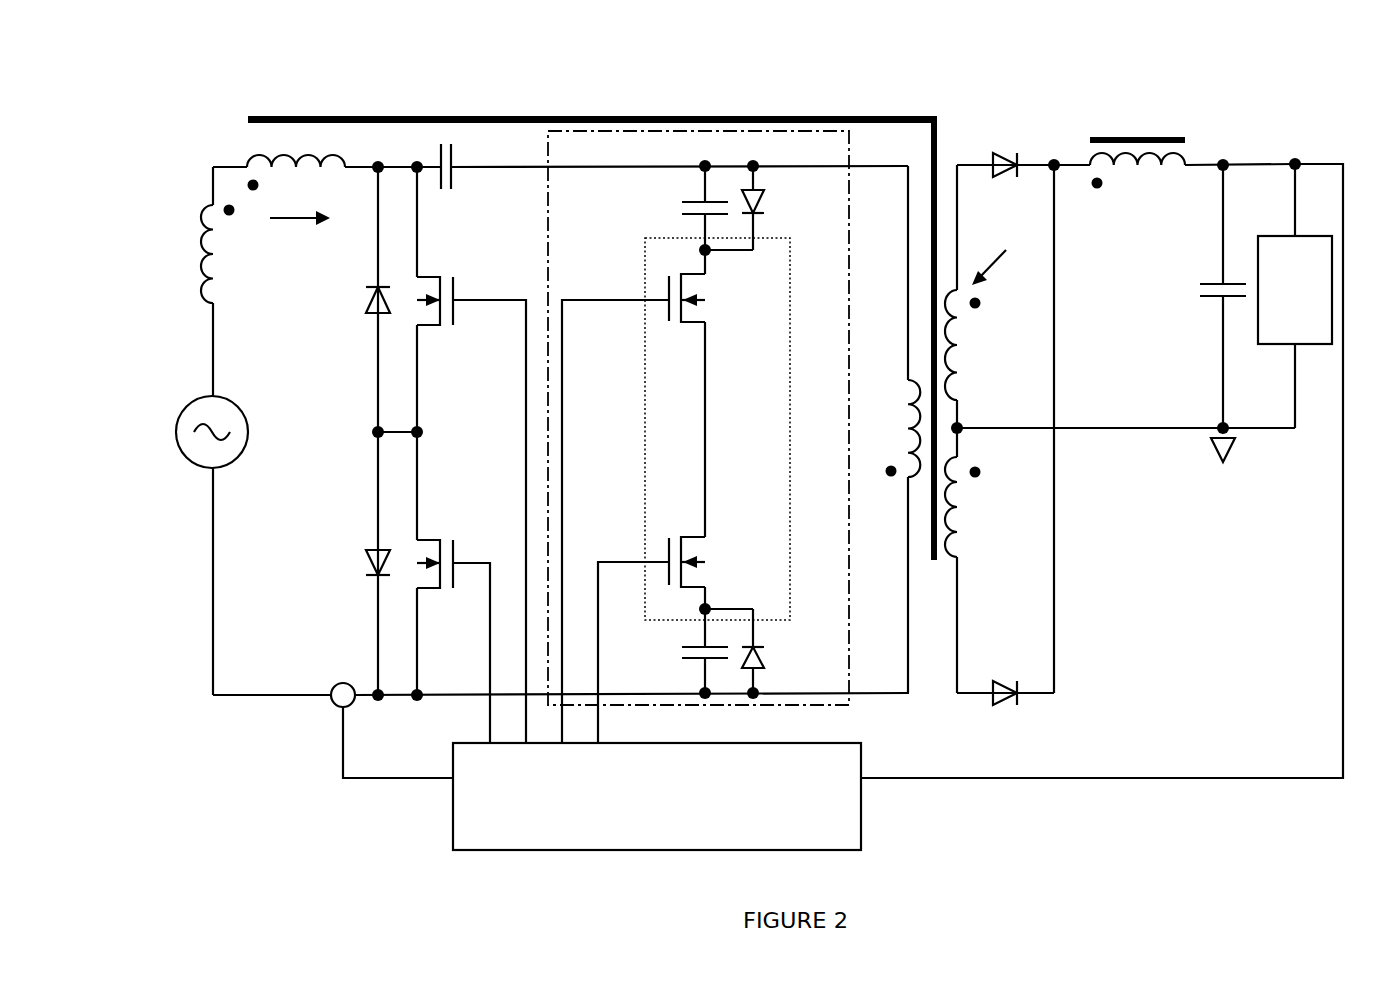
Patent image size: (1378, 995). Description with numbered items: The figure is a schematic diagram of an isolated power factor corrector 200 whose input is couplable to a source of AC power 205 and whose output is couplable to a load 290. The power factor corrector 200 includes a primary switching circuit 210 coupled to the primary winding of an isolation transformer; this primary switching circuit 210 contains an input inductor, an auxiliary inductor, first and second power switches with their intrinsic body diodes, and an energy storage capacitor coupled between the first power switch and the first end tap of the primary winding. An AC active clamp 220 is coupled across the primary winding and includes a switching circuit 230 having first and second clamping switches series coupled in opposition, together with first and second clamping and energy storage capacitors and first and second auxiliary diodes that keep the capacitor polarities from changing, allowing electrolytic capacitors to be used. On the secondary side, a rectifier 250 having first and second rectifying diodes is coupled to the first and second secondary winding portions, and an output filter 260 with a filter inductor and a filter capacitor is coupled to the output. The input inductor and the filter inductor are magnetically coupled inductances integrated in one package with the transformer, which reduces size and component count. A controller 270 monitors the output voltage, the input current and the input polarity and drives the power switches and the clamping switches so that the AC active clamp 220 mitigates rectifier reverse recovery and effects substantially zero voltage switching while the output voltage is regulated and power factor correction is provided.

The isolated power factor corrector 200 is at (182, 67).
The source of AC power 205 is at (219, 421).
The primary switching circuit 210 is at (465, 108).
The AC active clamp 220 is at (698, 437).
The switching circuit 230 is at (676, 490).
The rectifier 250 is at (1053, 105).
The output filter 260 is at (1247, 105).
The controller 270 is at (657, 796).
The load 290 is at (1295, 296).